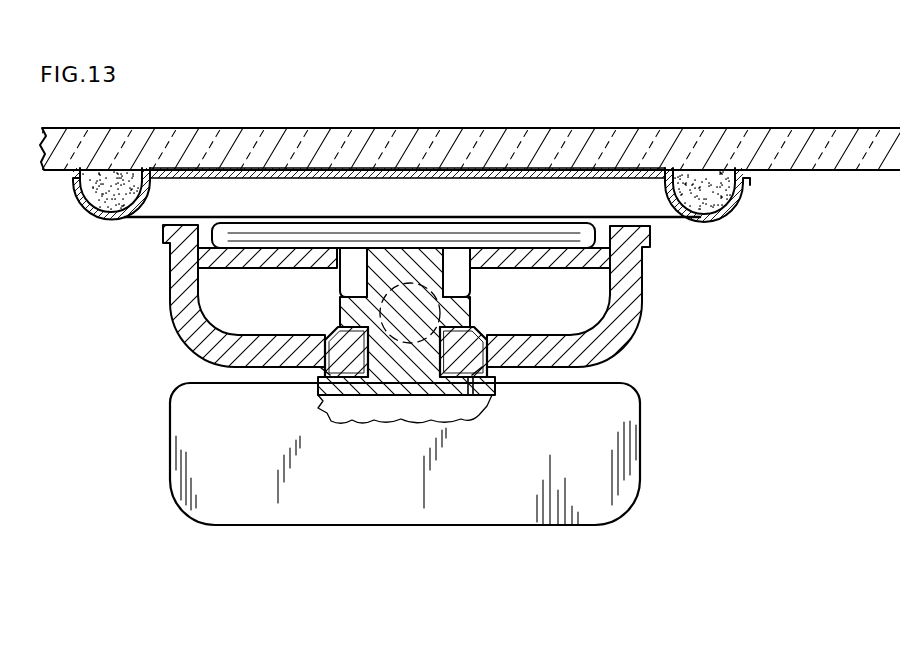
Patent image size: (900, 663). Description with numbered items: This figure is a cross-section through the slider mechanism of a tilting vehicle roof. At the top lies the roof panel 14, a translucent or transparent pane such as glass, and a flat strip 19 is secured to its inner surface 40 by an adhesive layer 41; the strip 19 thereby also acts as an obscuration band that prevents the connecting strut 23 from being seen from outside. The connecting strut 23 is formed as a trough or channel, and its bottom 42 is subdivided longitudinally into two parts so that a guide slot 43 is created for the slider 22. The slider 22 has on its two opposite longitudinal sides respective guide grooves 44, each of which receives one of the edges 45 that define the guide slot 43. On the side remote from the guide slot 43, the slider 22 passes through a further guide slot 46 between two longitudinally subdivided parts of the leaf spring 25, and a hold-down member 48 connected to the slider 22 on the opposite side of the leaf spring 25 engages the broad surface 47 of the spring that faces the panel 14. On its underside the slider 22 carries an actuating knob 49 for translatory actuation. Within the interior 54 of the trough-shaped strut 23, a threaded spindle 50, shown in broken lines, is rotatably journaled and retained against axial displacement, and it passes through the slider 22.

The roof panel 14 is at (232, 128).
The flat strip 19 is at (710, 222).
The slider 22 is at (472, 306).
The connecting strut 23 is at (411, 317).
The leaf spring 25 is at (215, 271).
The inner surface 40 is at (818, 172).
The adhesive layer 41 is at (709, 176).
The bottom 42 is at (238, 358).
The guide slot 43 is at (374, 374).
The guide grooves 44 is at (350, 345).
The edges 45 is at (322, 374).
The guide slot 46 is at (348, 262).
The broad surface 47 is at (287, 248).
The hold-down member 48 is at (548, 243).
The actuating knob 49 is at (472, 512).
The threaded spindle 50 is at (419, 300).
The interior 54 is at (210, 311).